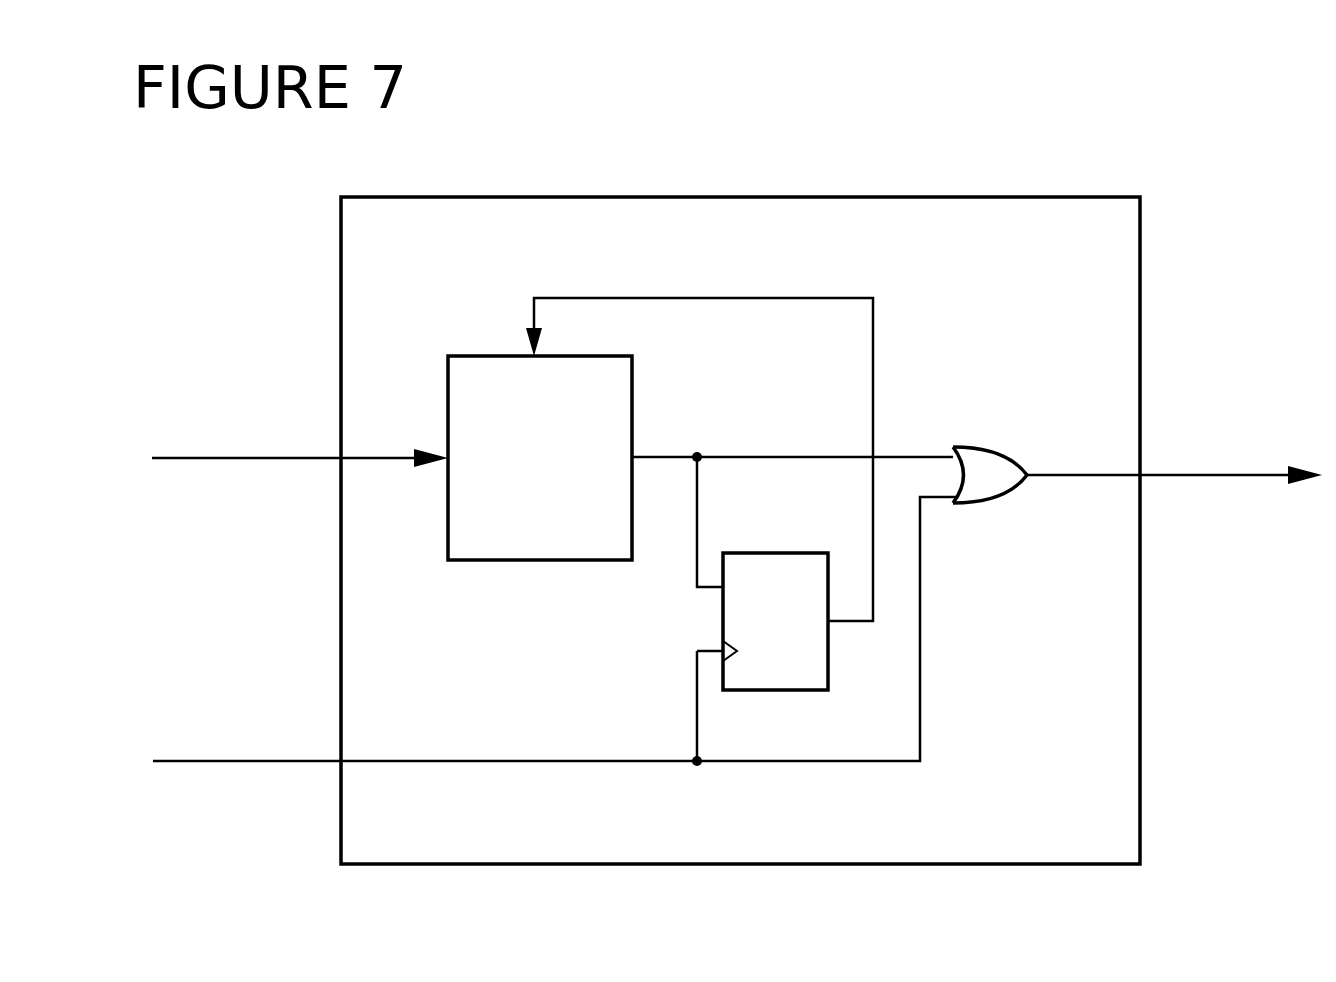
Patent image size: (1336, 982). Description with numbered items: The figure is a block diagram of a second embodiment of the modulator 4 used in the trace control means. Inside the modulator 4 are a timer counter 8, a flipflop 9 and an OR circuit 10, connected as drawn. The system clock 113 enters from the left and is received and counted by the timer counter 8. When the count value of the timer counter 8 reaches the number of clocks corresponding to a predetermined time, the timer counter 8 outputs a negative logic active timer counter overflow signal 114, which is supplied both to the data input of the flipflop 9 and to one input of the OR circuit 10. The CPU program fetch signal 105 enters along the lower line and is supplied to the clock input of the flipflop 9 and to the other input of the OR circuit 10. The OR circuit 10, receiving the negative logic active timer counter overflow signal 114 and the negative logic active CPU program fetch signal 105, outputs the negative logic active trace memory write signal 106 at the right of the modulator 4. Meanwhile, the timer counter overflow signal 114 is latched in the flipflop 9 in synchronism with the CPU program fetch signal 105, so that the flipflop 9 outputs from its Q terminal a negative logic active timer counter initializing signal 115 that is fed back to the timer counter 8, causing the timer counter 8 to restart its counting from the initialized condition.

The modulator 4 is at (946, 197).
The timer counter 8 is at (632, 408).
The flipflop 9 is at (770, 553).
The OR circuit 10 is at (979, 449).
The system clock 113 is at (245, 466).
The timer counter overflow signal 114 is at (771, 457).
The timer counter initializing signal 115 is at (875, 366).
The CPU program fetch signal 105 is at (247, 767).
The trace memory write signal 106 is at (1192, 480).